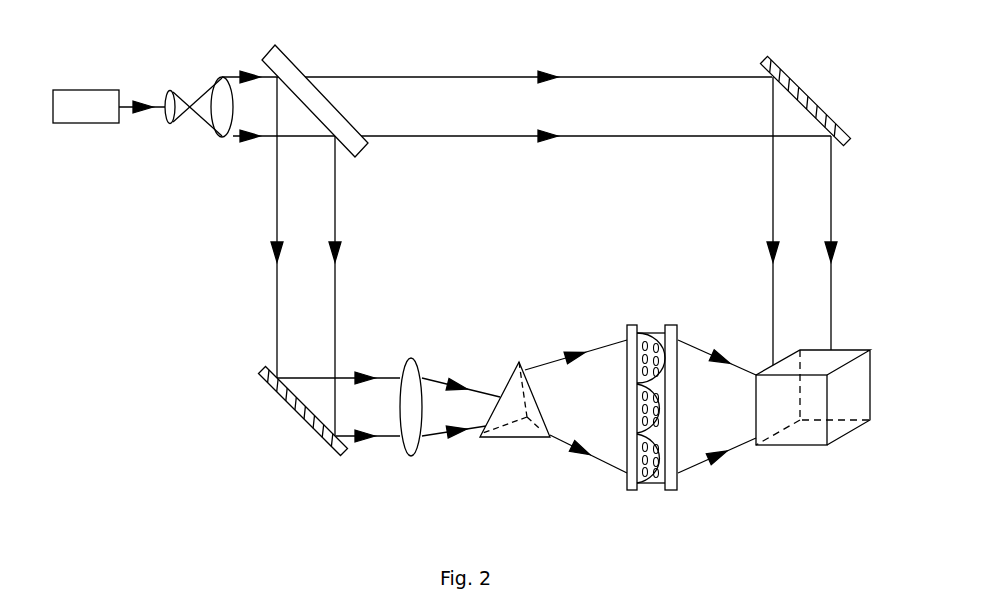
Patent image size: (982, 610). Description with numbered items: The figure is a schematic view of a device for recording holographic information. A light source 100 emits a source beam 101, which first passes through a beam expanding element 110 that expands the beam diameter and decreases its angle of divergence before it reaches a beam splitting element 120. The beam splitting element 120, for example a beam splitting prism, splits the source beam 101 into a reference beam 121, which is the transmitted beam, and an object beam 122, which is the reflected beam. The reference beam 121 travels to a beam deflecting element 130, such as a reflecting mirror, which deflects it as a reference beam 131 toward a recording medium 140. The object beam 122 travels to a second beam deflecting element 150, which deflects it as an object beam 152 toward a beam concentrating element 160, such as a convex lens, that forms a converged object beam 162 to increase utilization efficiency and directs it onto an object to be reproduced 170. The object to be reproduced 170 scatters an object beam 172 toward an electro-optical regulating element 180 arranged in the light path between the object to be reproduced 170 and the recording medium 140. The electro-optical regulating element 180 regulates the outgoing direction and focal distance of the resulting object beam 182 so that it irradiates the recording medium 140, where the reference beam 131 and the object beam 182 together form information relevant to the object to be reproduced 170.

The light source 100 is at (88, 90).
The source beam 101 is at (159, 163).
The beam expanding element 110 is at (188, 90).
The beam splitting element 120 is at (298, 69).
The reference beam 121 is at (562, 172).
The object beam 122 is at (388, 260).
The beam deflecting element 130 is at (782, 71).
The reference beam 131 is at (752, 260).
The recording medium 140 is at (789, 447).
The beam deflecting element 150 is at (321, 436).
The object beam 152 is at (389, 345).
The beam concentrating element 160 is at (410, 457).
The converged object beam 162 is at (477, 345).
The object to be reproduced 170 is at (516, 437).
The object beam 172 is at (587, 345).
The electro-optical regulating element 180 is at (652, 488).
The object beam 182 is at (742, 344).